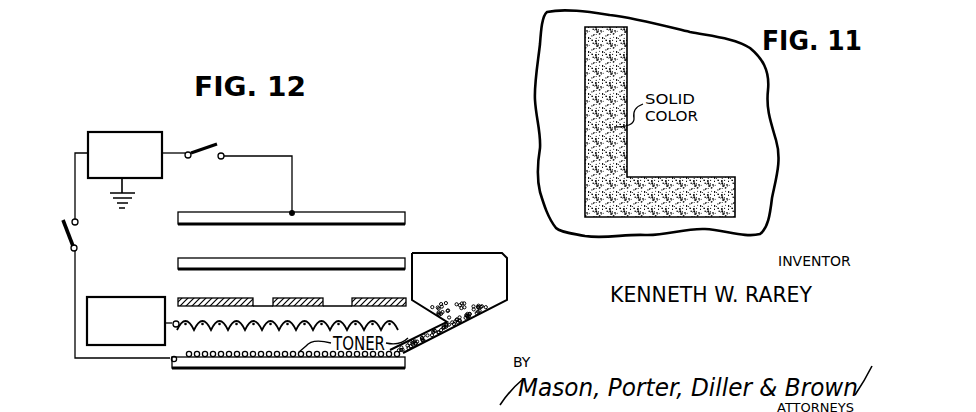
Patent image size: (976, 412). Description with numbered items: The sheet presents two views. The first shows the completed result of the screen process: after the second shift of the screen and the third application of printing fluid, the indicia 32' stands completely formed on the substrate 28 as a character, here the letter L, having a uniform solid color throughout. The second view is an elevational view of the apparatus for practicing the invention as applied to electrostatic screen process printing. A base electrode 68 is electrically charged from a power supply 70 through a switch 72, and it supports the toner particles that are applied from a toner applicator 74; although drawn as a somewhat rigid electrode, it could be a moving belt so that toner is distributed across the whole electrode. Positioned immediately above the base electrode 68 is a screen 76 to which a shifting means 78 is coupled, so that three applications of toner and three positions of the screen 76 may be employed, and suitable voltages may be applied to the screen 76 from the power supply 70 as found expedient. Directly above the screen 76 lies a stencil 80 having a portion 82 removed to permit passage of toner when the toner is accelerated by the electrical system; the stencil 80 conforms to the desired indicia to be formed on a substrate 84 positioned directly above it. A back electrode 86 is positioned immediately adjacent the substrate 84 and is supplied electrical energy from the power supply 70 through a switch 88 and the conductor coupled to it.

In FIG. 12, the power supply 70 is at (132, 132).
In FIG. 12, the switch 88 is at (206, 158).
In FIG. 12, the switch 72 is at (77, 236).
In FIG. 12, the shifting means 78 is at (125, 297).
In FIG. 12, the back electrode 86 is at (305, 190).
In FIG. 12, the substrate 84 is at (337, 244).
In FIG. 12, the stencil 80 is at (334, 298).
In FIG. 12, the removed portion 82 is at (347, 298).
In FIG. 12, the screen 76 is at (278, 331).
In FIG. 12, the base electrode 68 is at (376, 369).
In FIG. 12, the toner applicator 74 is at (511, 285).
In FIG. 11, the substrate 28 is at (538, 80).
In FIG. 11, the indicia 32' is at (640, 122).